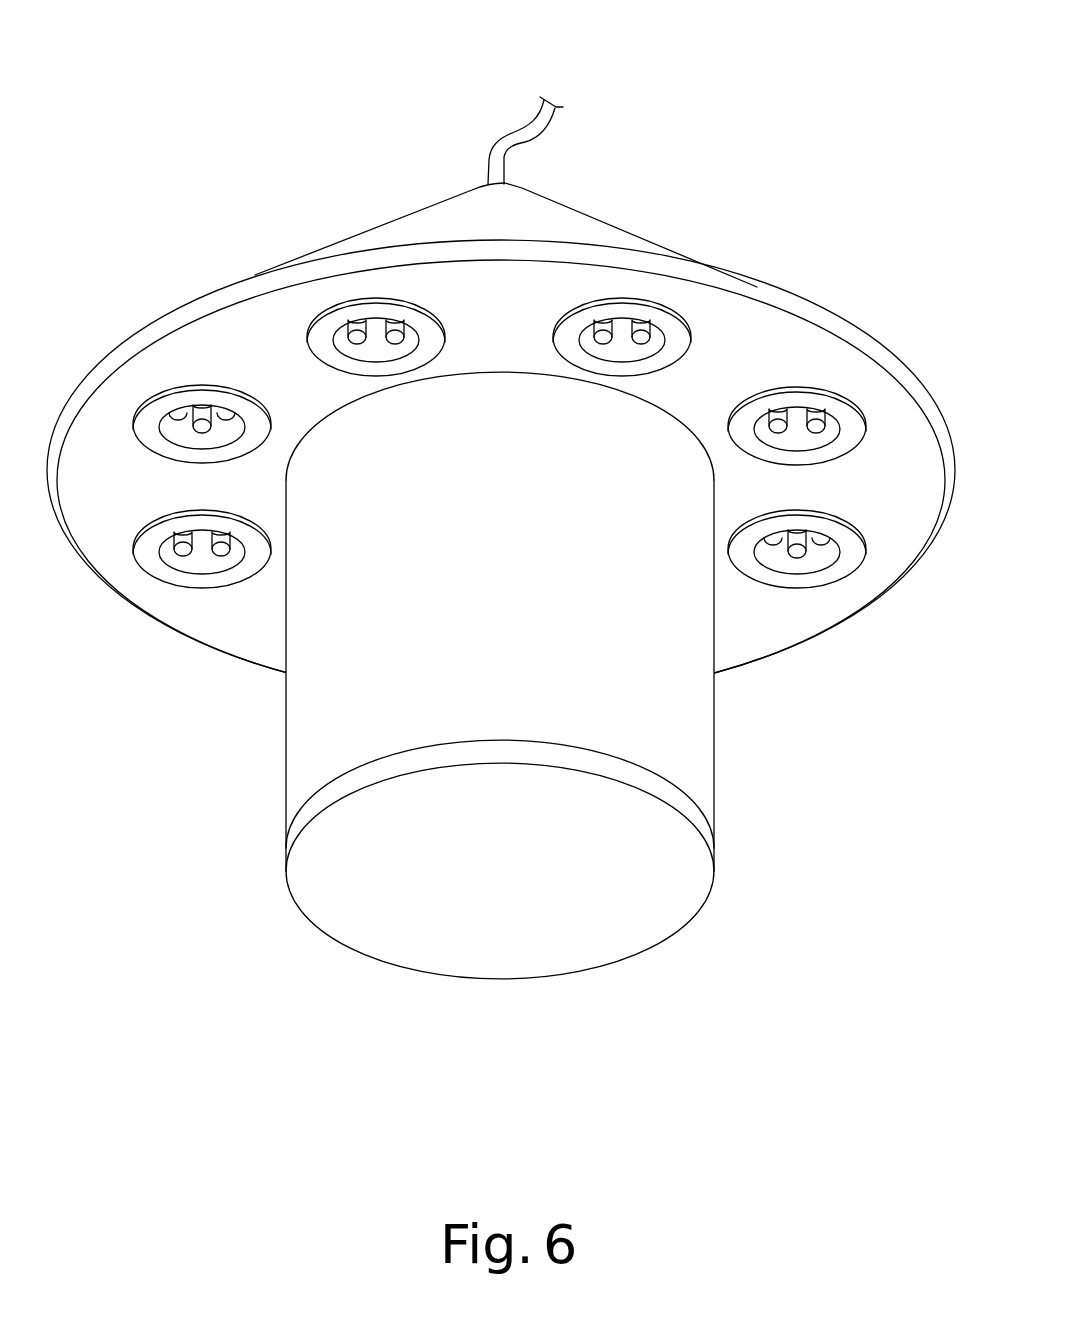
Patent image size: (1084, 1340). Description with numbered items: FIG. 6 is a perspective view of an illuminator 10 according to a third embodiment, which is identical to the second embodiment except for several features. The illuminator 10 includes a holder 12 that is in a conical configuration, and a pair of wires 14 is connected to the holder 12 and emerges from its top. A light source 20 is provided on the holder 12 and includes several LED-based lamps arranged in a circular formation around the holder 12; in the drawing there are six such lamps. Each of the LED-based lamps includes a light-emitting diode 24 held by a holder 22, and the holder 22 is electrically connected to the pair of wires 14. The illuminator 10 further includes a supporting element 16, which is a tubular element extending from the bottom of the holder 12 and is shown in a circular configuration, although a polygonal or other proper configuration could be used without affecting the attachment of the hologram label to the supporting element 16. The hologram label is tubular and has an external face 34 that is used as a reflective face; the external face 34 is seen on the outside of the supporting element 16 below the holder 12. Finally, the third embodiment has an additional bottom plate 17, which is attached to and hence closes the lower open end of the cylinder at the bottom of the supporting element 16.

The illuminator 10 is at (501, 540).
The holder 12 is at (202, 307).
The pair of wires 14 is at (535, 123).
The supporting element 16 is at (522, 724).
The bottom plate 17 is at (472, 947).
The light source 20 is at (501, 321).
The holder 22 is at (703, 238).
The light-emitting diode 24 is at (623, 337).
The external face 34 is at (303, 736).